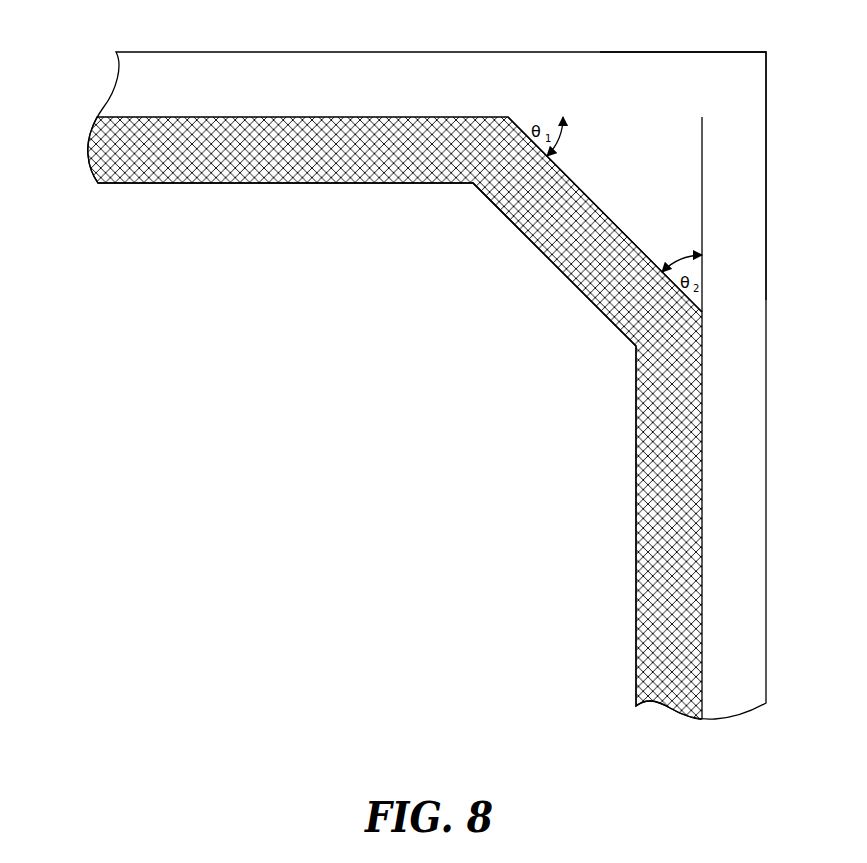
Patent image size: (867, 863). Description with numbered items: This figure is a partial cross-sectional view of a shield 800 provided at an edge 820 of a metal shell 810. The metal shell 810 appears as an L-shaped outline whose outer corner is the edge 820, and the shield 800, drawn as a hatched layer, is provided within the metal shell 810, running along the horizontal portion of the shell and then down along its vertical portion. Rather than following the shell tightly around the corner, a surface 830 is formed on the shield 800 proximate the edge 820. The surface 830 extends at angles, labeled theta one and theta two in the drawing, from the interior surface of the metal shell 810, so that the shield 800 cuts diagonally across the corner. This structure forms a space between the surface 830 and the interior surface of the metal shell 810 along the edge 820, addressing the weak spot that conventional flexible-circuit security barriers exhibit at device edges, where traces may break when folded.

The shield 800 is at (90, 160).
The metal shell 810 is at (128, 95).
The edge 820 is at (766, 52).
The surface 830 is at (610, 219).